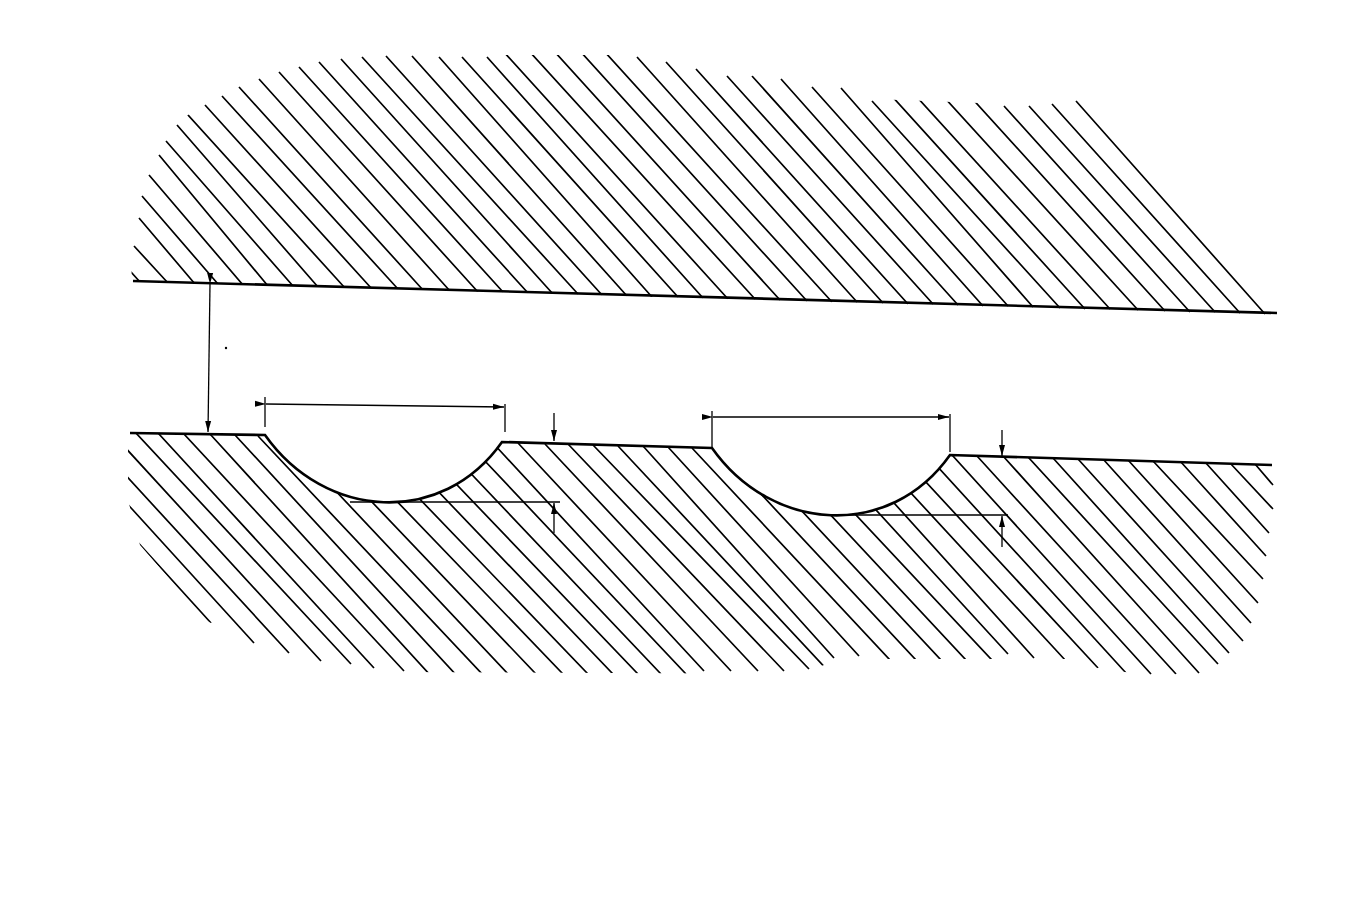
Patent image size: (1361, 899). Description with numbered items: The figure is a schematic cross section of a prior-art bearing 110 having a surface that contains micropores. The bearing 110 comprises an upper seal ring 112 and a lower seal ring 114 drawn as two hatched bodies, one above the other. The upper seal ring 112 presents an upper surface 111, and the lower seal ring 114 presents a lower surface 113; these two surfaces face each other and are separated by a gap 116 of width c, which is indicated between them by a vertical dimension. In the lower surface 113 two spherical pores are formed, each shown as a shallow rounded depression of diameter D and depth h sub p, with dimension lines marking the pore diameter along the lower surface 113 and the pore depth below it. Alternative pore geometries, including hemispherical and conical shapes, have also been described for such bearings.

The bearing 110 is at (140, 122).
The upper surface 111 is at (1180, 313).
The upper seal ring 112 is at (720, 204).
The lower surface 113 is at (1177, 465).
The lower seal ring 114 is at (697, 587).
The gap 116 is at (648, 372).